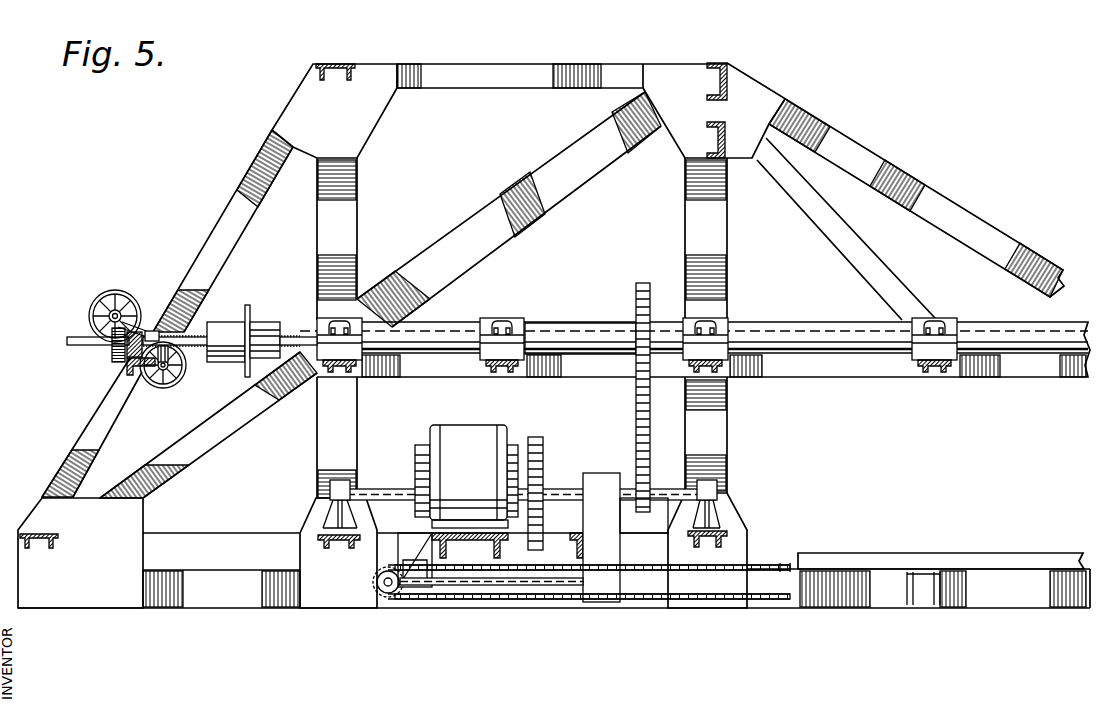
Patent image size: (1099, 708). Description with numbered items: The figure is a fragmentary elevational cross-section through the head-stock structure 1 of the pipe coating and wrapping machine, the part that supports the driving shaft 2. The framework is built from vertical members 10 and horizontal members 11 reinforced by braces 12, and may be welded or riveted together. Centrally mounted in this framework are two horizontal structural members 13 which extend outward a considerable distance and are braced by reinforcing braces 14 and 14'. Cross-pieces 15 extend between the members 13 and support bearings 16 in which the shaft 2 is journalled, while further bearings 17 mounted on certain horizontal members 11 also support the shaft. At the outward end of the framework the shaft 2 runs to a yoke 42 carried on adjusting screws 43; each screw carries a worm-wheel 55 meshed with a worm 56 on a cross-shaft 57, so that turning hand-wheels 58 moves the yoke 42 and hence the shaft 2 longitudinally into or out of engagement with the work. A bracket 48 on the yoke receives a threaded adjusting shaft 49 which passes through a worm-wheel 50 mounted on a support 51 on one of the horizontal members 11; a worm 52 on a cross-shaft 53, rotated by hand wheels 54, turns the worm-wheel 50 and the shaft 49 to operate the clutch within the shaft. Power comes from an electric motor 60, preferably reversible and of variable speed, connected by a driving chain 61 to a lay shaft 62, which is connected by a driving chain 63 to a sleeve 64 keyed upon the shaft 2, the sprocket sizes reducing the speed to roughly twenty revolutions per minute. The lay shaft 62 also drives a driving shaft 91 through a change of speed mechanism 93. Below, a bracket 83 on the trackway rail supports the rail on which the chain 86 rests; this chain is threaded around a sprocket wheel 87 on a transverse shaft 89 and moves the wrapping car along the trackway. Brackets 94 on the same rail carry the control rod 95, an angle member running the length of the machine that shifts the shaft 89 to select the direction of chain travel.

The head-stock structure 1 is at (477, 367).
The driving shaft 2 is at (832, 332).
The vertical members 10 is at (345, 222).
The horizontal members 11 is at (333, 63).
The braces 12 is at (222, 212).
The horizontal structural members 13 is at (1037, 362).
The reinforcing brace 14 is at (895, 180).
The reinforcing brace 14' is at (846, 229).
The cross-pieces 15 is at (513, 368).
The bearings 16 is at (497, 320).
The bearings 17 is at (357, 320).
The yoke 42 is at (262, 320).
The adjusting screws 43 is at (192, 346).
The bracket 48 is at (222, 320).
The adjusting shaft 49 is at (82, 343).
The worm-wheel 50 is at (161, 328).
The support 51 is at (173, 333).
The worm 52 is at (163, 371).
The cross-shaft 53 is at (168, 372).
The hand wheels 54 is at (158, 362).
The worm-wheel 55 is at (113, 352).
The worm 56 is at (92, 305).
The cross-shaft 57 is at (105, 316).
The hand-wheels 58 is at (113, 290).
The electric motor 60 is at (466, 476).
The driving chain 61 is at (543, 447).
The lay shaft 62 is at (565, 500).
The driving chain 63 is at (636, 390).
The sleeve 64 is at (570, 320).
The bracket 83 is at (763, 605).
The chain 86 is at (765, 568).
The sprocket wheel 87 is at (390, 600).
The shaft 89 is at (380, 593).
The driving shaft 91 is at (522, 587).
The change of speed mechanism 93 is at (600, 483).
The brackets 94 is at (915, 595).
The control rod 95 is at (932, 558).